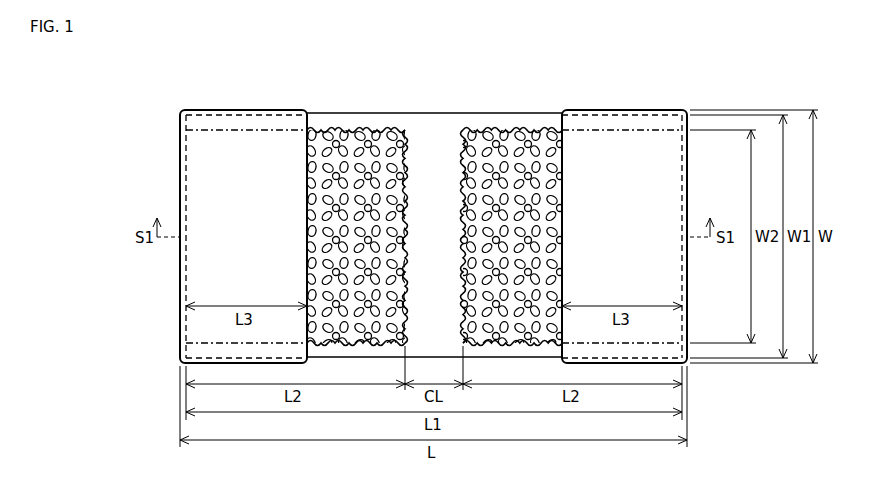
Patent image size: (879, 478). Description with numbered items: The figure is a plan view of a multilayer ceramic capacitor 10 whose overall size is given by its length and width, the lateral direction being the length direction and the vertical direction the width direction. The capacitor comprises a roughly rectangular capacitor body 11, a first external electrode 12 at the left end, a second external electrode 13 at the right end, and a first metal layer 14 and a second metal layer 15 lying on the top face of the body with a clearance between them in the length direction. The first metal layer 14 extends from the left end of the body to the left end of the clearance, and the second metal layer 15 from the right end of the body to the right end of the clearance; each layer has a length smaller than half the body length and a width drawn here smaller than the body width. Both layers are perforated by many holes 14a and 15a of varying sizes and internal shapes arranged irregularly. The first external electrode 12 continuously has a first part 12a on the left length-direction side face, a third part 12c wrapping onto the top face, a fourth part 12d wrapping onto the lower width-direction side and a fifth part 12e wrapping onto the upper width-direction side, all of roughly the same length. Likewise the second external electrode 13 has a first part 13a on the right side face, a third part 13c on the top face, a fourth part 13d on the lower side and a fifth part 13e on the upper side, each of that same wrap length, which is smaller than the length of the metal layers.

The multilayer ceramic capacitor 10 is at (194, 101).
The capacitor body 11 is at (434, 112).
The first external electrode 12 is at (174, 182).
The first part 12a is at (180, 274).
The third part 12c is at (262, 161).
The fourth part 12d is at (230, 363).
The fifth part 12e is at (221, 110).
The second external electrode 13 is at (690, 182).
The first part 13a is at (690, 274).
The third part 13c is at (599, 161).
The fourth part 13d is at (640, 363).
The fifth part 13e is at (640, 110).
The first metal layer 14 is at (363, 126).
The holes 14a is at (321, 130).
The second metal layer 15 is at (511, 126).
The holes 15a is at (548, 130).